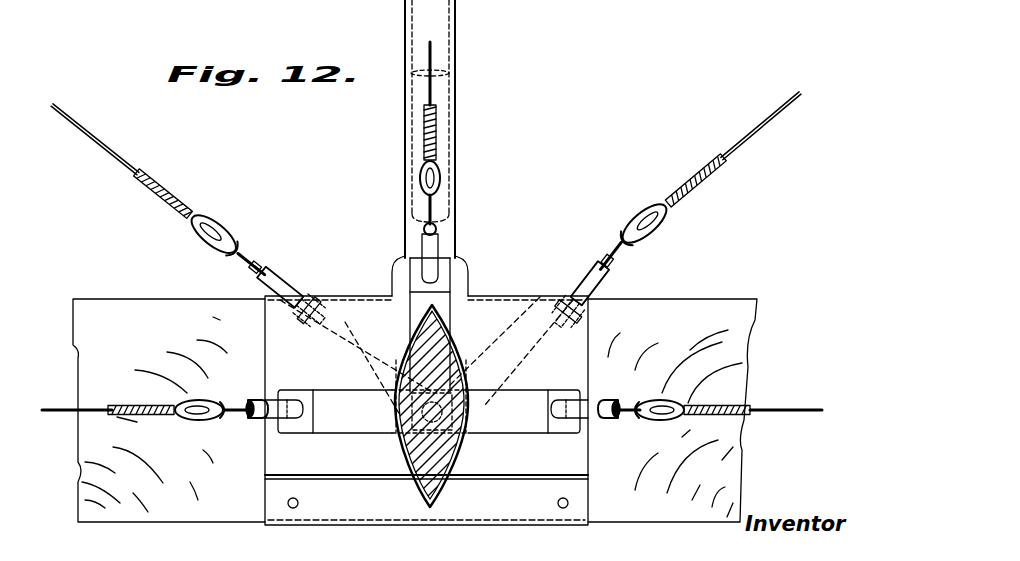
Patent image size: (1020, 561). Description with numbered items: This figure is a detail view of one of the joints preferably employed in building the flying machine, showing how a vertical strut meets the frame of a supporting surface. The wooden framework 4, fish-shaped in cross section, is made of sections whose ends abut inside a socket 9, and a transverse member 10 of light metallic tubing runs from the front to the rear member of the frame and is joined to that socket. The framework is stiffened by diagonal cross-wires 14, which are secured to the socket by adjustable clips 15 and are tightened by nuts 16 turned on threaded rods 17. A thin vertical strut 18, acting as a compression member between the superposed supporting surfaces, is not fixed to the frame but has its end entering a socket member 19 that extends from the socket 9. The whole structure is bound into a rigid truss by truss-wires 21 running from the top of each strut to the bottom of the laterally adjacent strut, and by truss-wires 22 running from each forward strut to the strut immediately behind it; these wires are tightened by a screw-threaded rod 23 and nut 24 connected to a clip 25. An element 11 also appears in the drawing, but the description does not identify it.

The framework 4 is at (128, 307).
The socket 9 is at (470, 519).
The transverse member 10 is at (406, 30).
The upper pole section 11 is at (544, 10).
The diagonal cross-wire 14 is at (135, 178).
The adjustable clip 15 is at (336, 322).
The nut 16 is at (284, 283).
The threaded rod 17 is at (243, 248).
The vertical strut 18 is at (440, 330).
The socket member 19 is at (407, 477).
The truss-wire 21 is at (92, 405).
The truss-wire 22 is at (433, 60).
The screw-threaded rod 23 is at (224, 420).
The nut 24 is at (268, 404).
The clip 25 is at (333, 425).